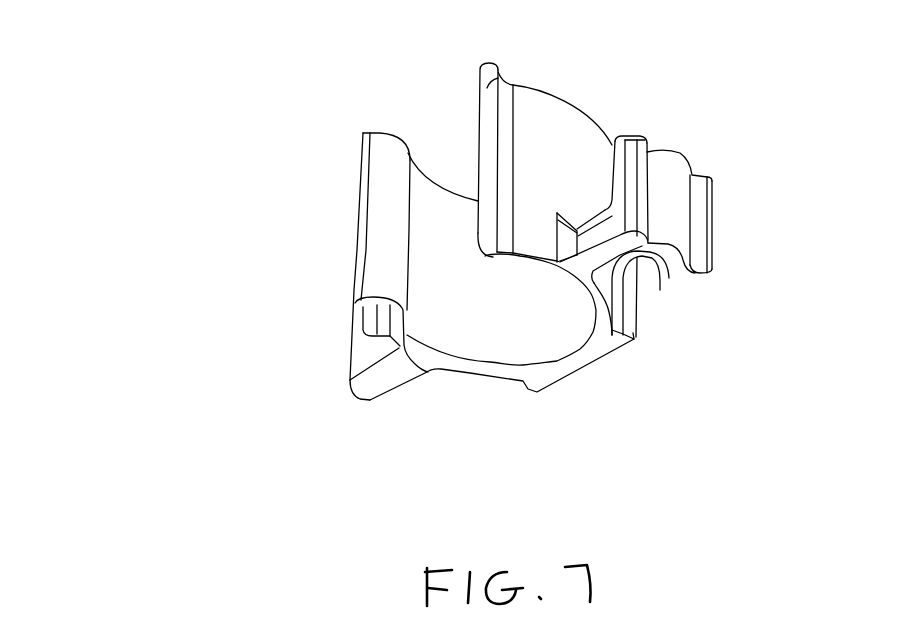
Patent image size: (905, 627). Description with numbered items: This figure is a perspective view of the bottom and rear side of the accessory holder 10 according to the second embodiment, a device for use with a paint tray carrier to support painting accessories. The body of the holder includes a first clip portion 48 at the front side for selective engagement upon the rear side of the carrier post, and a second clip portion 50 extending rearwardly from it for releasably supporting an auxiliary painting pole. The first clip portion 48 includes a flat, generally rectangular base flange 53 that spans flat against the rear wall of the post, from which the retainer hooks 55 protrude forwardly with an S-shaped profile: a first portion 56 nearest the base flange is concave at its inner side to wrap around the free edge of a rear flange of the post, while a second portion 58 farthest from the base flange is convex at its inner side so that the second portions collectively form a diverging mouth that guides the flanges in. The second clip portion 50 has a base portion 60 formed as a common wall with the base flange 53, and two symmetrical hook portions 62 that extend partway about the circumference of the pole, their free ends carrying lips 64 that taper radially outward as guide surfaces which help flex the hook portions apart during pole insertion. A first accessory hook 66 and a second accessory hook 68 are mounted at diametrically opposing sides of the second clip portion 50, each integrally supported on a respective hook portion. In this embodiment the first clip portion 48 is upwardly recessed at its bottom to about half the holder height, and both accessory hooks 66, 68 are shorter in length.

The accessory holder 10 is at (112, 124).
The first clip portion 48 is at (705, 100).
The second clip portion 50 is at (465, 78).
The base flange 53 is at (603, 360).
The retainer hooks 55 is at (702, 155).
The first portion of the hook 56 is at (669, 278).
The second portion of the hook 58 is at (707, 268).
The base portion 60 is at (556, 338).
The hook portions 62 is at (422, 185).
The lips 64 is at (365, 177).
The first accessory hook 66 is at (630, 140).
The second accessory hook 68 is at (357, 328).